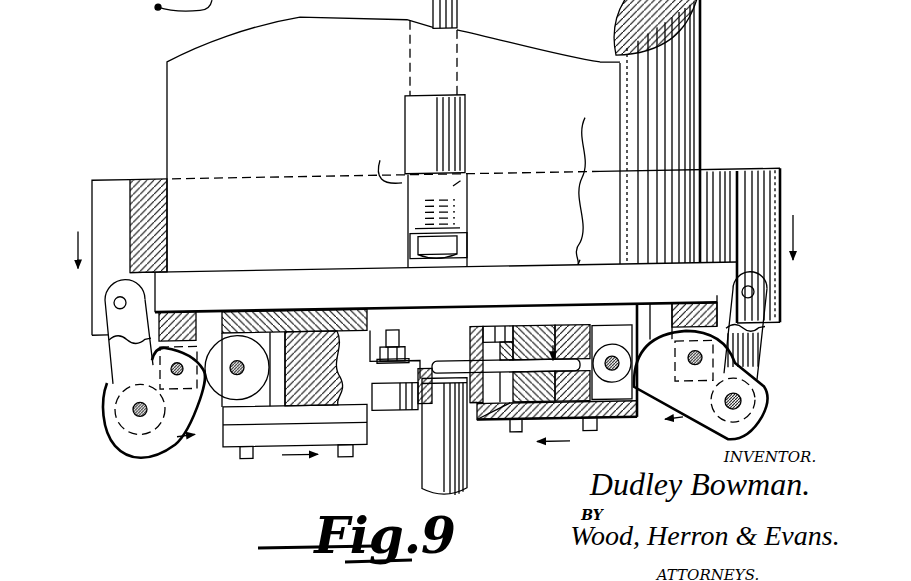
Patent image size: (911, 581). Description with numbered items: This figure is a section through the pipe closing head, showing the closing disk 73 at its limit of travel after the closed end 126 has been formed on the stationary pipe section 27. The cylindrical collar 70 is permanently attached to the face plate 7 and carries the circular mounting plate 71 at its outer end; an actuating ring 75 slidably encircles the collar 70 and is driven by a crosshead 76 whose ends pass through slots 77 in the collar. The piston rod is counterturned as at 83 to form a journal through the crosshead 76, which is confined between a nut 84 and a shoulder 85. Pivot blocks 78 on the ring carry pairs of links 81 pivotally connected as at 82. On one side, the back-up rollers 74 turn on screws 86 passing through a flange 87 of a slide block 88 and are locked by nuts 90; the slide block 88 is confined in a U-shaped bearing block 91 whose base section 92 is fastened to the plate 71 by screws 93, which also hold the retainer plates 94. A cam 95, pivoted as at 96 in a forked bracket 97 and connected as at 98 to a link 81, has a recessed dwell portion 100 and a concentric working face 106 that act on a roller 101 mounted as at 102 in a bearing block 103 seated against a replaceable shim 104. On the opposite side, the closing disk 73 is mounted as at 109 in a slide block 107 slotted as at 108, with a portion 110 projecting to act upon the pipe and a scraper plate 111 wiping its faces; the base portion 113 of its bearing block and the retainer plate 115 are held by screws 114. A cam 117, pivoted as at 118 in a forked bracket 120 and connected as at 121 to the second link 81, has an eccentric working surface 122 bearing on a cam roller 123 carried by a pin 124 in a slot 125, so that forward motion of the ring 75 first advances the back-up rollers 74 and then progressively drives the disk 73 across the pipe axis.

The face plate 7 is at (742, 170).
The pipe section 27 is at (428, 488).
The cylindrical collar 70 is at (672, 84).
The circular mounting plate 71 is at (357, 267).
The closing disk 73 is at (553, 345).
The back-up rollers 74 is at (372, 393).
The actuating ring 75 is at (473, 136).
The crosshead 76 is at (408, 204).
The slots 77 is at (468, 116).
The pivot blocks 78 is at (102, 196).
The links 81 is at (118, 336).
The pivot connection 82 is at (118, 297).
The counterturned portion 83 is at (462, 185).
The nut 84 is at (430, 238).
The shoulder 85 is at (381, 161).
The screws 86 is at (392, 346).
The flange 87 is at (405, 358).
The slide block 88 is at (343, 333).
The nuts 90 is at (410, 330).
The bearing block 91 is at (288, 445).
The base section 92 is at (288, 300).
The screws 93 is at (346, 456).
The retainer plates 94 is at (326, 447).
The cam 95 is at (138, 436).
The pivot 96 is at (170, 364).
The forked bracket 97 is at (170, 303).
The pivot connection 98 is at (133, 404).
The recessed dwell portion 100 is at (196, 302).
The roller 101 is at (237, 340).
The rotatable mounting 102 is at (240, 333).
The bearing block 103 is at (228, 443).
The replaceable shim 104 is at (260, 443).
The concentric working face 106 is at (203, 380).
The slide block 107 is at (552, 452).
The slot 108 is at (592, 433).
The rotatable mounting 109 is at (505, 327).
The projecting portion 110 is at (436, 361).
The scraper plate 111 is at (478, 405).
The base portion 113 is at (582, 250).
The screws 114 is at (515, 433).
The retainer plate 115 is at (543, 443).
The cam 117 is at (757, 397).
The pivot rod 118 is at (700, 370).
The forked bracket 120 is at (678, 302).
The pivot connection 121 is at (757, 410).
The eccentric working surface 122 is at (683, 312).
The cam roller 123 is at (612, 347).
The pin 124 is at (620, 424).
The slot 125 is at (630, 278).
The closed end 126 is at (423, 400).